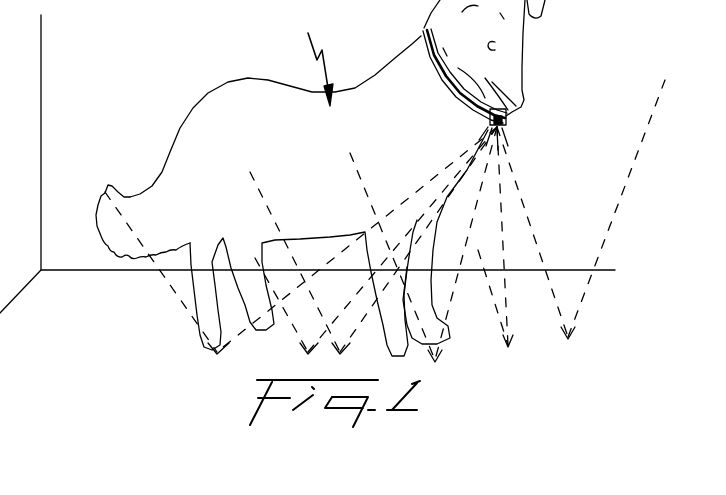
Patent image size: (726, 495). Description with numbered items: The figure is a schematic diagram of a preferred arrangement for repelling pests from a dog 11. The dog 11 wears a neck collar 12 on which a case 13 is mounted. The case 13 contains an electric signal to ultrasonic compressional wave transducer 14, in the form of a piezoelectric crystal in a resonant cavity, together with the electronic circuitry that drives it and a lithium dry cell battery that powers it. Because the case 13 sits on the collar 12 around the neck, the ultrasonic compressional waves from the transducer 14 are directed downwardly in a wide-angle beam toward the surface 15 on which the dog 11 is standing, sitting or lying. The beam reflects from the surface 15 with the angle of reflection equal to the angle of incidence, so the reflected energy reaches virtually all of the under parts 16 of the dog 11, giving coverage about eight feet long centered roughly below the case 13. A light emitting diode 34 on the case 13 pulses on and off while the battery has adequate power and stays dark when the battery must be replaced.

The dog 11 is at (316, 59).
The neck collar 12 is at (421, 38).
The case 13 is at (492, 125).
The electric signal to ultrasonic compressional wave transducer 14 is at (508, 118).
The surface 15 is at (571, 290).
The under parts 16 is at (314, 237).
The light emitting diode 34 is at (493, 122).